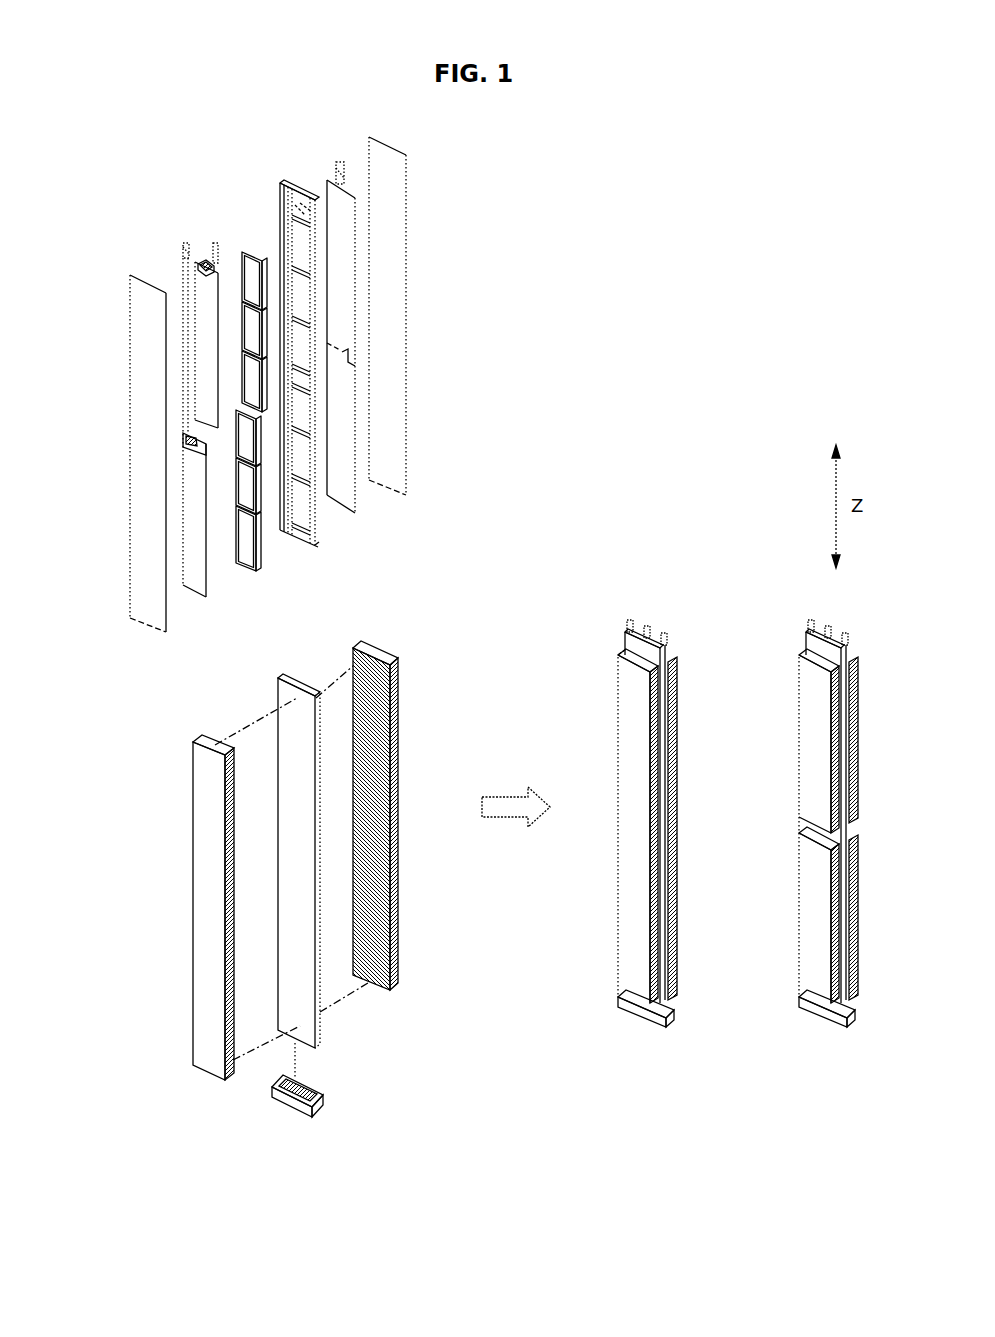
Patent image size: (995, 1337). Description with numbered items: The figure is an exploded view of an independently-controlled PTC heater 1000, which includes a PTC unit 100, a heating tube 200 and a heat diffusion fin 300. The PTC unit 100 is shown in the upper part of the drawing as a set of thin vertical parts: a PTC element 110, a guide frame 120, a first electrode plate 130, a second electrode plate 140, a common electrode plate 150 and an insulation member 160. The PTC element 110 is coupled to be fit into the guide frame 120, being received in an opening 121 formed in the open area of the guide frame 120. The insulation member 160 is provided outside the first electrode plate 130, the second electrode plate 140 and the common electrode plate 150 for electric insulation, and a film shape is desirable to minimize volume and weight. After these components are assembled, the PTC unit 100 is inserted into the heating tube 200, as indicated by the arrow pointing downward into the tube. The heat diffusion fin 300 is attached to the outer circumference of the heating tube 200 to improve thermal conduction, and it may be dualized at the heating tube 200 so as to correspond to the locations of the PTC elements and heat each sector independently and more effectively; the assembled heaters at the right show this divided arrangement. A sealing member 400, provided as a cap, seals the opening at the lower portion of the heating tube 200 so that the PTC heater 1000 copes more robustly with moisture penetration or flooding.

The PTC unit 100 is at (405, 502).
The PTC element 110 is at (257, 266).
The guide frame 120 is at (270, 176).
The opening 121 is at (282, 227).
The first electrode plate 130 is at (205, 350).
The second electrode plate 140 is at (192, 496).
The common electrode plate 150 is at (345, 230).
The insulation member 160 is at (134, 583).
The heating tube 200 is at (302, 982).
The heat diffusion fin 300 is at (380, 650).
The sealing member 400 is at (297, 1110).
The PTC heater 1000 is at (600, 590).